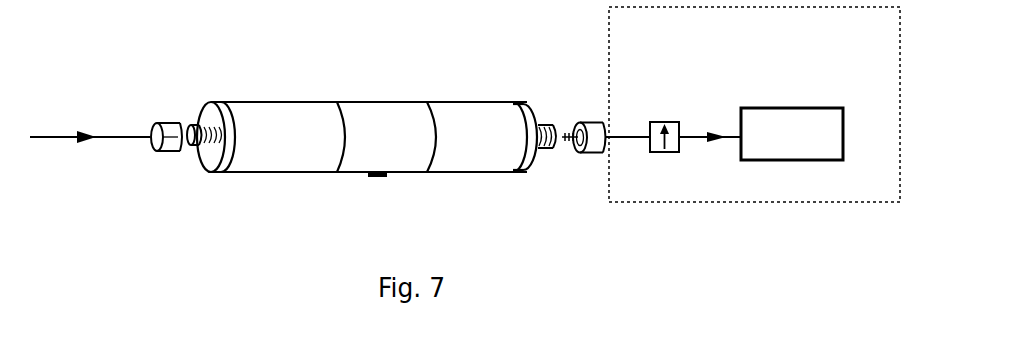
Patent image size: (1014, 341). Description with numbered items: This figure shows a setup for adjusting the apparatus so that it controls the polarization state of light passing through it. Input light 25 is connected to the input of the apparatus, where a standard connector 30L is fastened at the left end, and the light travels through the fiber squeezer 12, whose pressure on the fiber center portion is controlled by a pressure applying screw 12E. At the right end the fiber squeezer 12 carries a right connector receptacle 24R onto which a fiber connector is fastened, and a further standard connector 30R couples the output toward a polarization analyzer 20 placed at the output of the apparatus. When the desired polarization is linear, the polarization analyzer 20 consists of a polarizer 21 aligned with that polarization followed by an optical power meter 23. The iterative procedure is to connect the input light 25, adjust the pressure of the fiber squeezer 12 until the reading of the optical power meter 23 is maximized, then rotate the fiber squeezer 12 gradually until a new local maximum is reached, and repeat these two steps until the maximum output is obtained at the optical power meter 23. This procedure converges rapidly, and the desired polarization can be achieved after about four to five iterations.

The fiber squeezer 12 is at (368, 120).
The pressure applying screw 12E is at (385, 182).
The polarization analyzer 20 is at (637, 215).
The polarizer 21 is at (665, 153).
The optical power meter 23 is at (782, 147).
The right connector receptacle 24R is at (553, 120).
The input light 25 is at (72, 143).
The standard connector 30L is at (170, 116).
The standard connector 30R is at (582, 113).